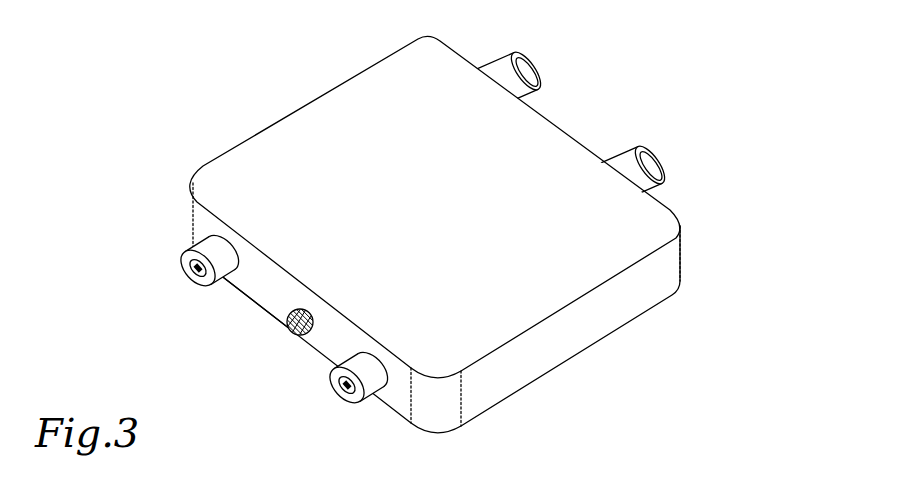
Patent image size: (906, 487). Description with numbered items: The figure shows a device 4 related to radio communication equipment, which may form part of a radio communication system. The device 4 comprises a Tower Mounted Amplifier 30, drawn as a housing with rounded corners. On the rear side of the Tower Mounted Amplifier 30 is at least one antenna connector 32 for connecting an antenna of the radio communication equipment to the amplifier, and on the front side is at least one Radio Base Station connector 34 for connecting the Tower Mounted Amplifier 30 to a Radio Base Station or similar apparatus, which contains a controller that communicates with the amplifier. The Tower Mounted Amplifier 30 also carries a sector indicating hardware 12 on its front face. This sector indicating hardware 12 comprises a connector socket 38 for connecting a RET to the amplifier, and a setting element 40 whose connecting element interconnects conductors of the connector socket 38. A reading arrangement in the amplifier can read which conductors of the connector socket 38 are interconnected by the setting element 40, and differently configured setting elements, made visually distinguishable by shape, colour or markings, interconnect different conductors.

The device 4 is at (444, 223).
The sector indicating hardware 12 is at (268, 324).
The Tower Mounted Amplifier 30 is at (598, 313).
The antenna connector 32 is at (508, 70).
The Radio Base Station connector 34 is at (210, 242).
The connector socket 38 is at (289, 328).
The setting element 40 is at (305, 309).